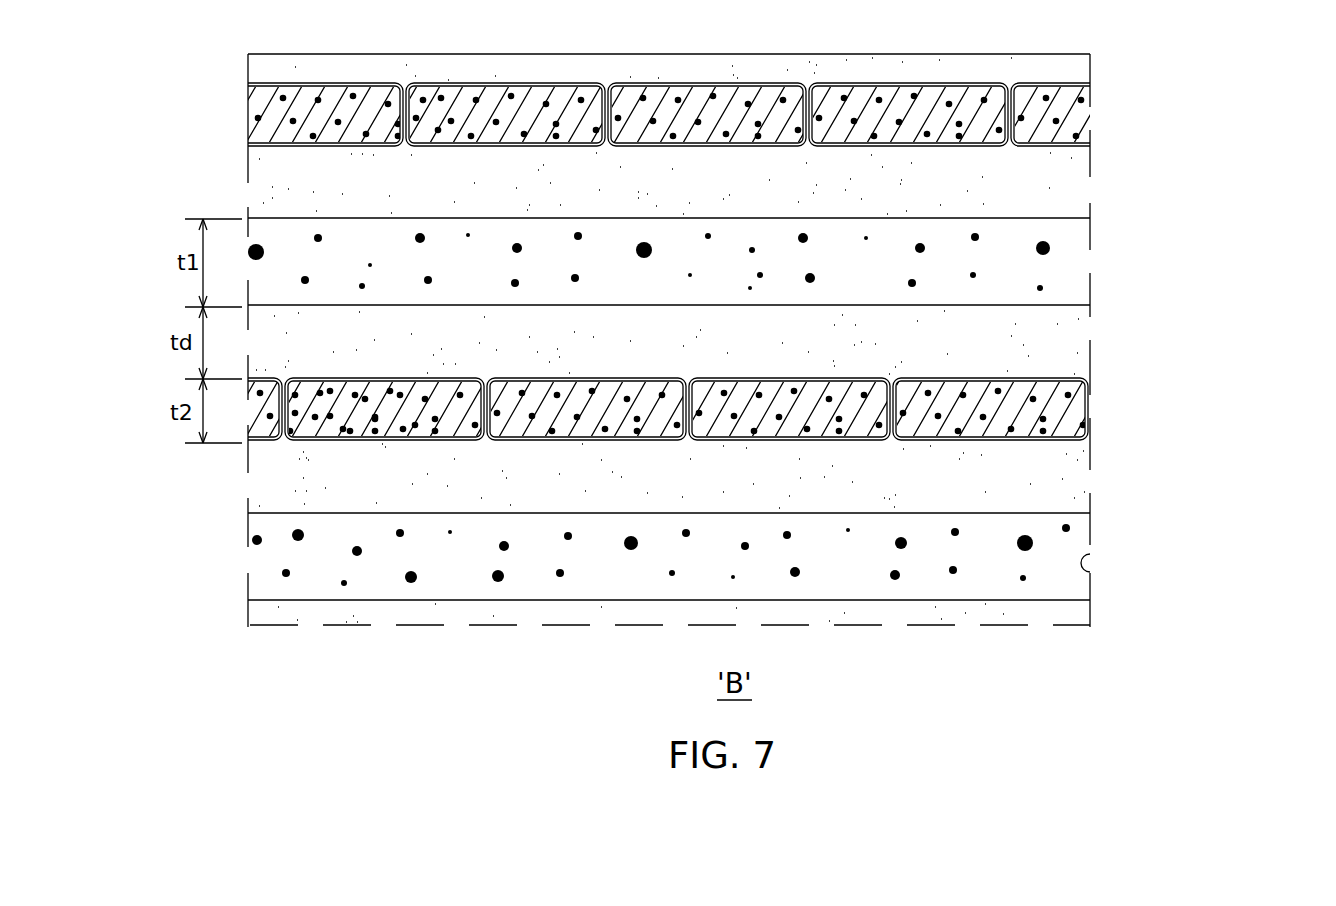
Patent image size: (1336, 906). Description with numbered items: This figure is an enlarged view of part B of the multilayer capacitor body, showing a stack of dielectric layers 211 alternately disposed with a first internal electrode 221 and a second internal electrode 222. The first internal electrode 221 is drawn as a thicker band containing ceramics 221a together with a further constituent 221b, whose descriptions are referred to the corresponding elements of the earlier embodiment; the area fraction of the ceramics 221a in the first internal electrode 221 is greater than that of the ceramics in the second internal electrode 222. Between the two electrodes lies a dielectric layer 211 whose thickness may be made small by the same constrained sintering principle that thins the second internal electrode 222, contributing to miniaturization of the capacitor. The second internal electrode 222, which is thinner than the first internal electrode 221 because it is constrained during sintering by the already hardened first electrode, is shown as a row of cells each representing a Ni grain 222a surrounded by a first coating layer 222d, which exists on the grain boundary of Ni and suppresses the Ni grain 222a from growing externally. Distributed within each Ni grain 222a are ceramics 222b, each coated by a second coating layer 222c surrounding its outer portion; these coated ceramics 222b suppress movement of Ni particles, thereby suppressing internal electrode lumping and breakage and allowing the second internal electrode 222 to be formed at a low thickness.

The dielectric layer 211 is at (1070, 337).
The first internal electrode 221 is at (773, 244).
The ceramics 221a is at (1052, 248).
The first internal electrode component 221b is at (1070, 267).
The second internal electrode 222 is at (751, 437).
The Ni grain 222a is at (1073, 385).
The ceramics 222b is at (1075, 413).
The second coating layers 222c is at (1073, 418).
The first coating layer 222d is at (1020, 438).